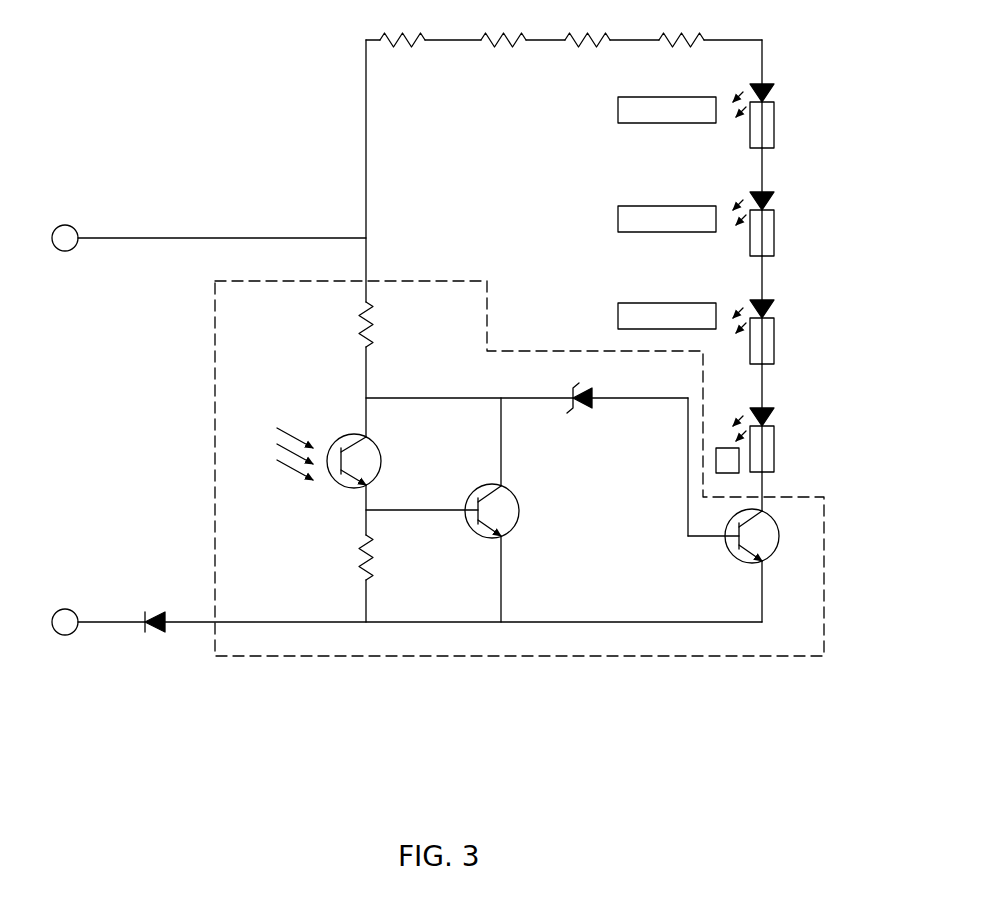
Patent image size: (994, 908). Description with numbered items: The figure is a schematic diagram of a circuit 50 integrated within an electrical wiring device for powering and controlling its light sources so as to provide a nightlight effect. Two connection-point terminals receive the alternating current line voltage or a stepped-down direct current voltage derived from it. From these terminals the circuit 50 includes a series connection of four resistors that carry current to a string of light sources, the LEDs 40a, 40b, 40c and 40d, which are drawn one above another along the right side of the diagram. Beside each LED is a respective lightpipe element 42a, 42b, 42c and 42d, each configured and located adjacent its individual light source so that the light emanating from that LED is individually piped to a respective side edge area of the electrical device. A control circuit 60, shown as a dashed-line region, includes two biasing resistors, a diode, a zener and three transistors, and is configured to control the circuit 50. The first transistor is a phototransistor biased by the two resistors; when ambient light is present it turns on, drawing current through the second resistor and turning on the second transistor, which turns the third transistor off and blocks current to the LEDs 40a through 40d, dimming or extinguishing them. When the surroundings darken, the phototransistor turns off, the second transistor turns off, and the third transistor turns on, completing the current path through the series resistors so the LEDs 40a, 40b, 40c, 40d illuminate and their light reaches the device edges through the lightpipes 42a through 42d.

The circuit 50 is at (257, 53).
The control circuit 60 is at (305, 666).
The LED 40a is at (762, 450).
The LED 40b is at (762, 342).
The LED 40c is at (762, 234).
The LED 40d is at (762, 126).
The lightpipe element 42a is at (727, 459).
The lightpipe element 42b is at (630, 303).
The lightpipe element 42c is at (630, 206).
The lightpipe element 42d is at (630, 104).